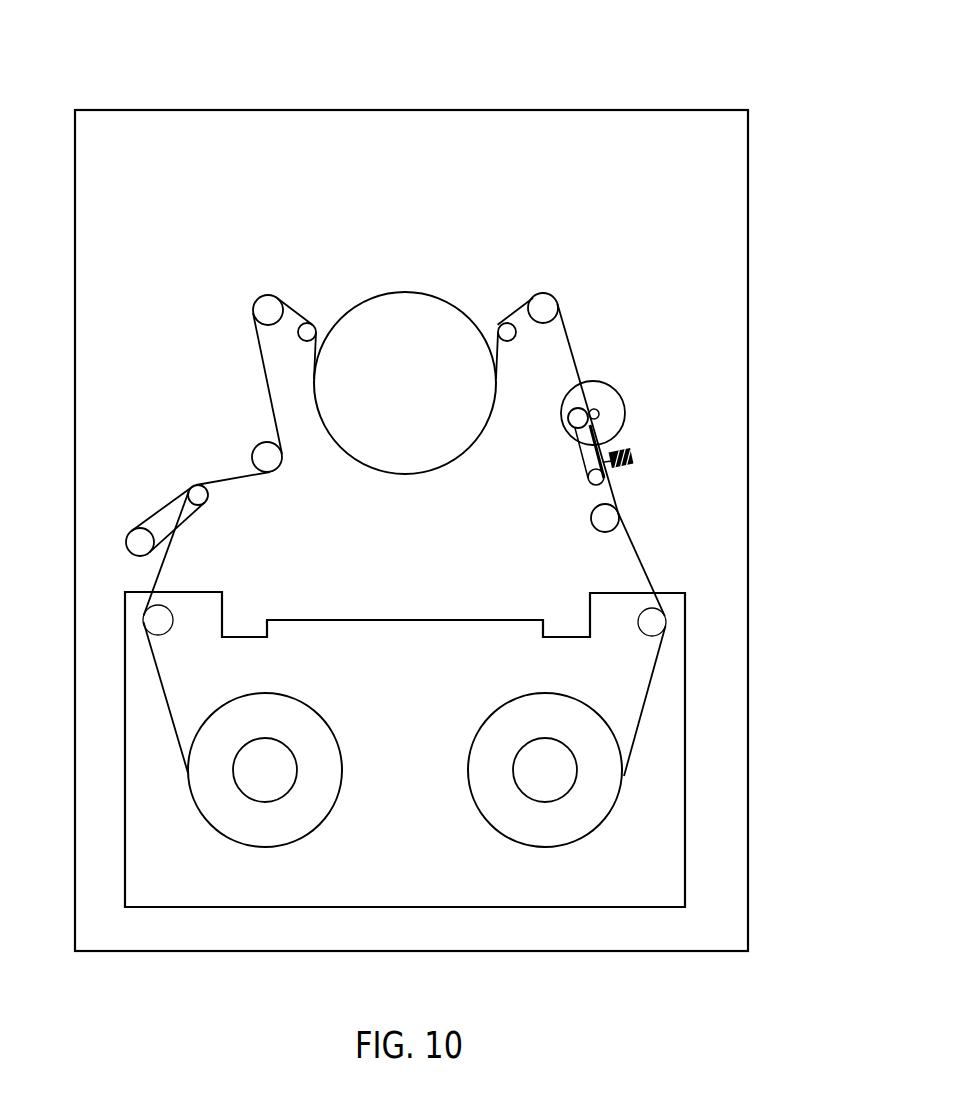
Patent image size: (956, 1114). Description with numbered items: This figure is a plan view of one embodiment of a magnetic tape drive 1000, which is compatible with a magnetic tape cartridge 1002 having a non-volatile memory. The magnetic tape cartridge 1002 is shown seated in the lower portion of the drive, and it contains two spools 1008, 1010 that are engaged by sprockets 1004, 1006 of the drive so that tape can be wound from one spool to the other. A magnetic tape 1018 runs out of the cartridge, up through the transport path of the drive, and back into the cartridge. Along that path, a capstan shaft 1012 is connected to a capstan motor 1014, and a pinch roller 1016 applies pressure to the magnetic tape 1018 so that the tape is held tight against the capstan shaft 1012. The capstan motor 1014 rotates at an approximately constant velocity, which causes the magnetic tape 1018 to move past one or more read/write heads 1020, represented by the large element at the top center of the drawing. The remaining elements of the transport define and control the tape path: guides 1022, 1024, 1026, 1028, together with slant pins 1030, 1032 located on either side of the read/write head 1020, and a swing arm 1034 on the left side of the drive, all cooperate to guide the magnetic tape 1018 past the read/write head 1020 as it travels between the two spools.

The magnetic tape drive 1000 is at (106, 80).
The magnetic tape cartridge 1002 is at (685, 735).
The sprocket 1004 is at (265, 770).
The sprocket 1006 is at (545, 770).
The spool 1008 is at (320, 825).
The spool 1010 is at (600, 825).
The capstan shaft 1012 is at (600, 412).
The capstan motor 1014 is at (601, 383).
The pinch roller 1016 is at (569, 424).
The magnetic tape 1018 is at (637, 553).
The read/write head 1020 is at (405, 383).
The guide 1022 is at (253, 450).
The guide 1024 is at (257, 296).
The guide 1026 is at (558, 306).
The guide 1028 is at (620, 517).
The slant pin 1030 is at (313, 325).
The slant pin 1032 is at (502, 325).
The swing arm 1034 is at (158, 514).